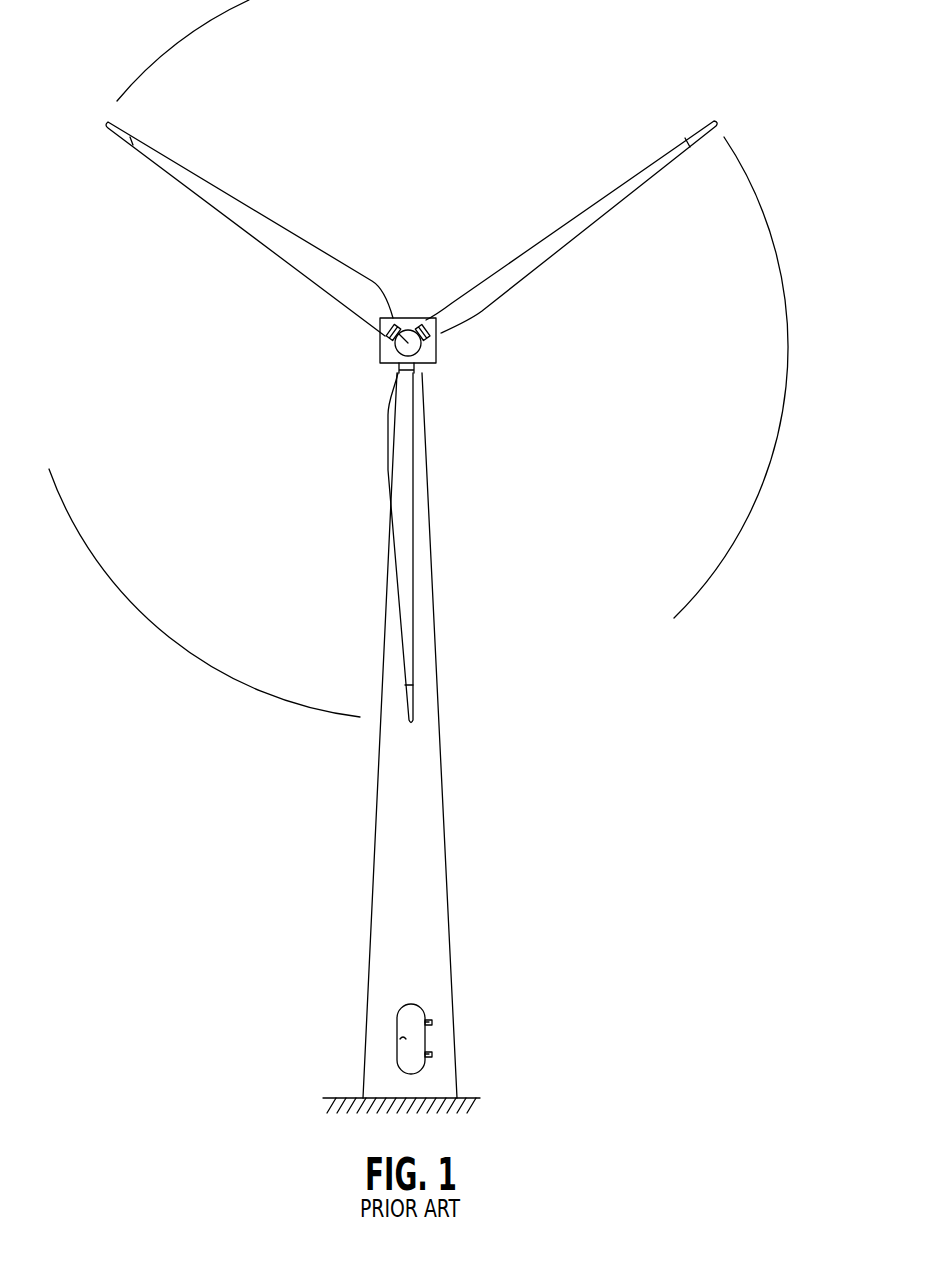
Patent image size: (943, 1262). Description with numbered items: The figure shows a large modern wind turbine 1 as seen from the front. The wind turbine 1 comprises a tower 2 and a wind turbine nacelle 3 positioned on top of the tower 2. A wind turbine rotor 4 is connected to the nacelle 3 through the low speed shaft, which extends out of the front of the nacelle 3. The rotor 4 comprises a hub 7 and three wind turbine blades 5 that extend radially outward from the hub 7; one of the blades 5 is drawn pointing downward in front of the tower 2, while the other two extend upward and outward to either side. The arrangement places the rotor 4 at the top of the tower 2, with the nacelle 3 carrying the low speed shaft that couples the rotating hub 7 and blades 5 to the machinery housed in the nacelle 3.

The wind turbine 1 is at (411, 617).
The tower 2 is at (437, 810).
The wind turbine nacelle 3 is at (437, 357).
The wind turbine rotor 4 is at (411, 422).
The wind turbine blades 5 is at (412, 582).
The hub 7 is at (395, 314).